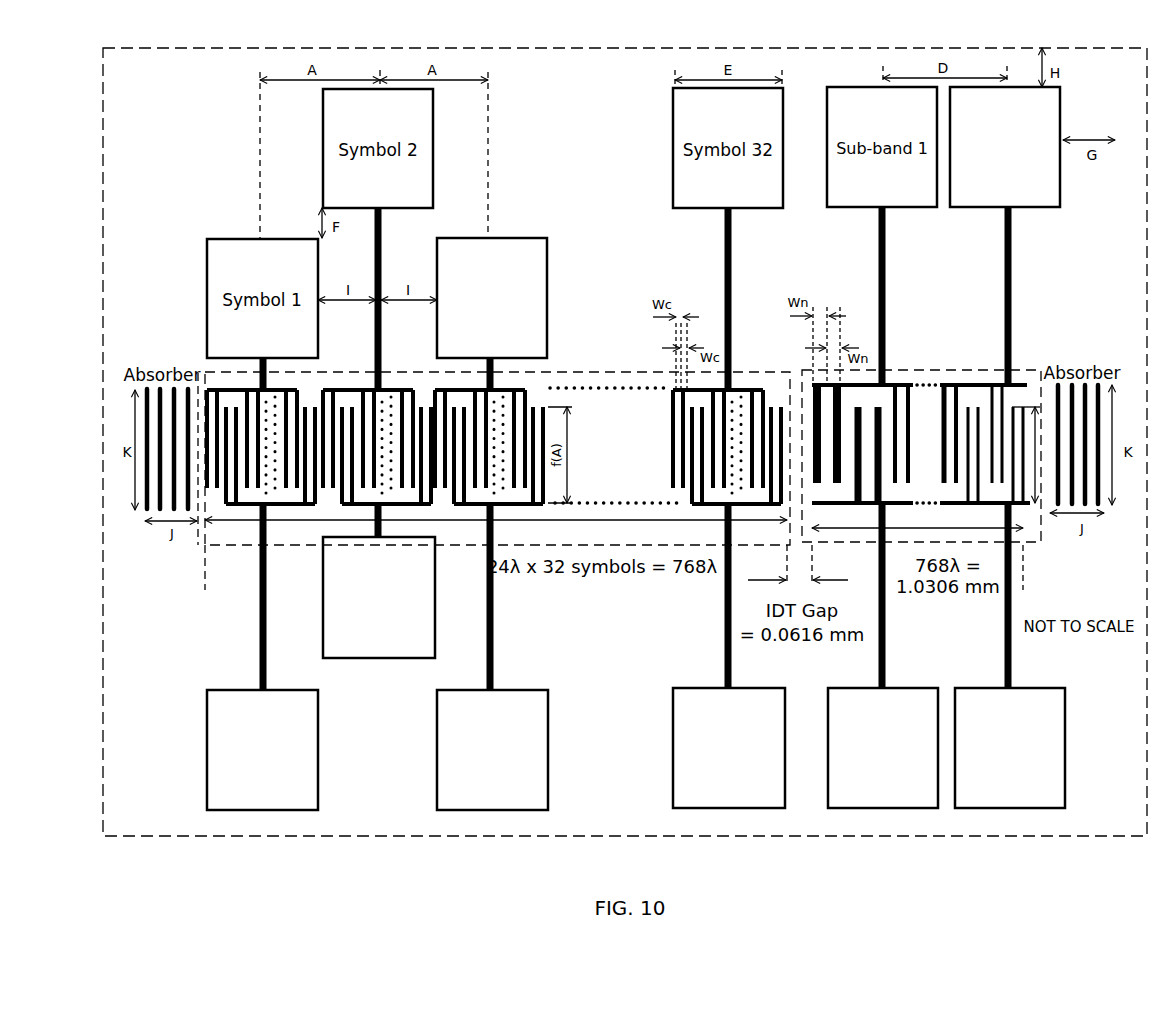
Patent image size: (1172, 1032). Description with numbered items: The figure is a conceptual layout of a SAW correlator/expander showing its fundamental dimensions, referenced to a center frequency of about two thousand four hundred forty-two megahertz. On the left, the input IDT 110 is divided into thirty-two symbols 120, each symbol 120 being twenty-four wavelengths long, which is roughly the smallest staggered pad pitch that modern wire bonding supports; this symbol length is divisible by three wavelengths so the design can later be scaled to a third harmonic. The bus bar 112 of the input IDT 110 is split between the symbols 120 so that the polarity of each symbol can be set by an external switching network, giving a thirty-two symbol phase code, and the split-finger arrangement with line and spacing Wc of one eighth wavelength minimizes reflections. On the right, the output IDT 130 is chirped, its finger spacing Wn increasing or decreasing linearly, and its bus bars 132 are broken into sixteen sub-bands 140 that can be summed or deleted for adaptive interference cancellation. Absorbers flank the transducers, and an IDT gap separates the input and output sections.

The input IDT 110 is at (495, 458).
The bus bar 112 is at (744, 387).
The symbol 120 is at (523, 238).
The output IDT 130 is at (944, 430).
The bus bar 132 is at (896, 385).
The sub-band 140 is at (1047, 207).